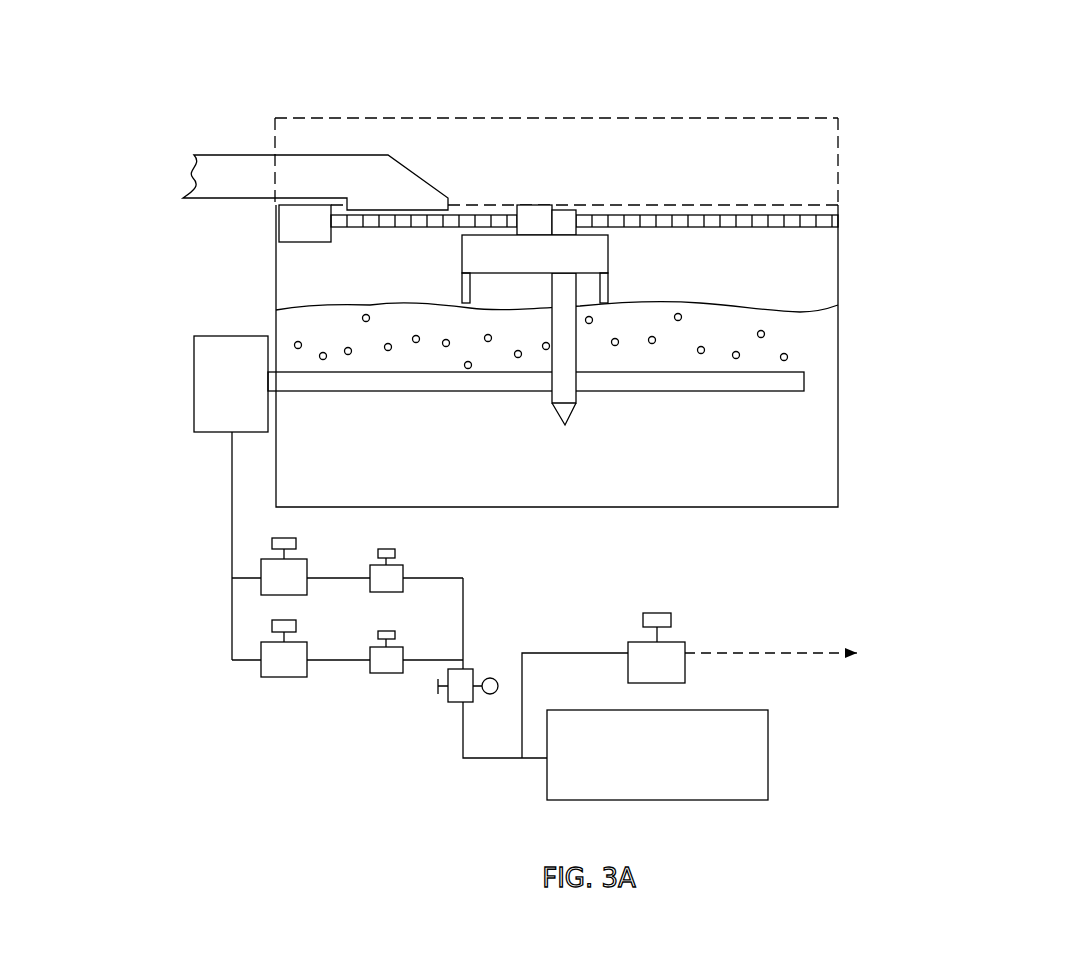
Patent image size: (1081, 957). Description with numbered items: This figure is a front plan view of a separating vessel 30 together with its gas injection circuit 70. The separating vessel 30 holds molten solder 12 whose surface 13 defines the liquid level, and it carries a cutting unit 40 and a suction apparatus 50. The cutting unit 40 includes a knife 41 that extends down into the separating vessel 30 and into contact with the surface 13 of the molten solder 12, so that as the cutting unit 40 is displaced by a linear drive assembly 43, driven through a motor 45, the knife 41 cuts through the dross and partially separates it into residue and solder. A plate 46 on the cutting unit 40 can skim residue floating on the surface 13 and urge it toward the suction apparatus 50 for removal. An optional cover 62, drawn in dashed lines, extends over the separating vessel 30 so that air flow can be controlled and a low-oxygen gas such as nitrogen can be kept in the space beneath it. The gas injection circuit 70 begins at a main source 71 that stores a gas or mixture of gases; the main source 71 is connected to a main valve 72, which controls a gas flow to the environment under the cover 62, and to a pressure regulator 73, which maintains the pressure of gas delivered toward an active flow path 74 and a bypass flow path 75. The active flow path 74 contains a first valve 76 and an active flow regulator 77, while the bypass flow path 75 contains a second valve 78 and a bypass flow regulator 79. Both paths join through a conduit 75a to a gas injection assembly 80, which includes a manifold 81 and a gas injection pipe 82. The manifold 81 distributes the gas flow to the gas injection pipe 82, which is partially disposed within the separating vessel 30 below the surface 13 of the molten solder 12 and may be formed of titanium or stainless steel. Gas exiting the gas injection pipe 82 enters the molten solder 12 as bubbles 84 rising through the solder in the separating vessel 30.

The separating vessel 30 is at (956, 108).
The cover 62 is at (830, 118).
The suction apparatus 50 is at (402, 162).
The linear drive assembly 43 is at (480, 220).
The motor 45 is at (287, 226).
The plate 46 is at (462, 293).
The cutting unit 40 is at (530, 343).
The knife 41 is at (554, 406).
The surface 13 is at (587, 356).
The molten solder 12 is at (357, 466).
The bubbles 84 is at (347, 347).
The manifold 81 is at (212, 367).
The gas injection pipe 82 is at (786, 387).
The gas injection assembly 80 is at (437, 371).
The gas injection circuit 70 is at (481, 616).
The main source 71 is at (637, 764).
The main valve 72 is at (675, 650).
The pressure regulator 73 is at (466, 670).
The active flow path 74 is at (243, 577).
The bypass flow path 75 is at (229, 637).
The conduit 75a is at (231, 531).
The first valve 76 is at (390, 575).
The active flow regulator 77 is at (298, 575).
The second valve 78 is at (385, 665).
The bypass flow regulator 79 is at (273, 667).